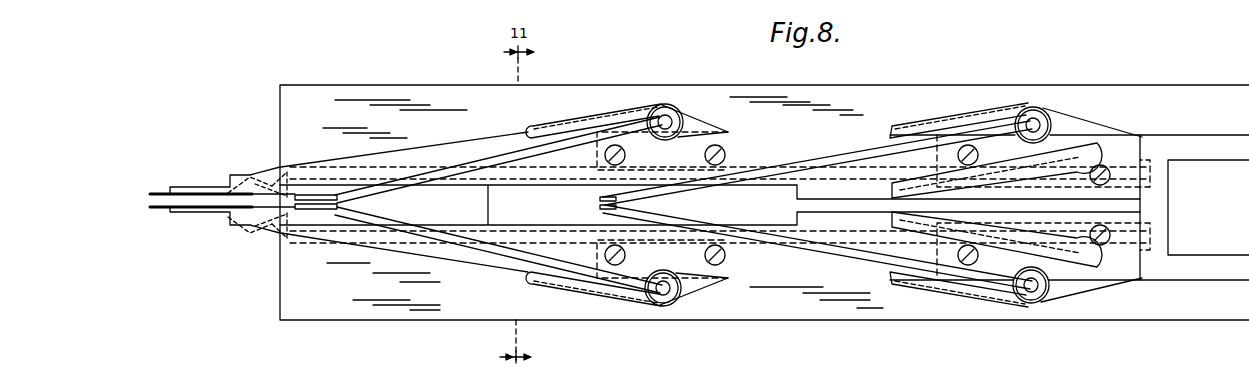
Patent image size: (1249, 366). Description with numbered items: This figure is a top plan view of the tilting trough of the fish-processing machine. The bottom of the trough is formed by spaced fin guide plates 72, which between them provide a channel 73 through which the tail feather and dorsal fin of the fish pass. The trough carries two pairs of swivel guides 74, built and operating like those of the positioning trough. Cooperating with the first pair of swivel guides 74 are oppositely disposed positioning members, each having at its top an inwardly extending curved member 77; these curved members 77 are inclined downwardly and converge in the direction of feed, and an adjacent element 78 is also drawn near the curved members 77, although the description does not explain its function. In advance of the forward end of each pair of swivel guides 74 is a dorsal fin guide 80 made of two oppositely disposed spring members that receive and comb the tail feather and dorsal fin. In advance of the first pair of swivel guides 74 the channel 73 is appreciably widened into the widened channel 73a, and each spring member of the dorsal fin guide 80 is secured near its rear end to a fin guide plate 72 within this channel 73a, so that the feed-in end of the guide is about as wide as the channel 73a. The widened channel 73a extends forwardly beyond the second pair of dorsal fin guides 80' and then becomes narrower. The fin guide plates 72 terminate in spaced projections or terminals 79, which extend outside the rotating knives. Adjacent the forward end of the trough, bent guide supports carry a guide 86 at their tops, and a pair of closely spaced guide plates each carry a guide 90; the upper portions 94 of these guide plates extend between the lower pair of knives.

The fin guide plates 72 is at (865, 97).
The channel 73 is at (1130, 209).
The widened channel 73a is at (710, 205).
The swivel guides 74 is at (484, 160).
The curved member 77 is at (1078, 155).
The end plate 78 is at (1127, 145).
The terminals 79 is at (186, 208).
The dorsal fin guide 80 is at (592, 204).
The second pair of dorsal fin guides 80' is at (316, 174).
The guide 86 is at (265, 173).
The guide 90 is at (243, 173).
The upper portions of the guide plates 94 is at (176, 190).